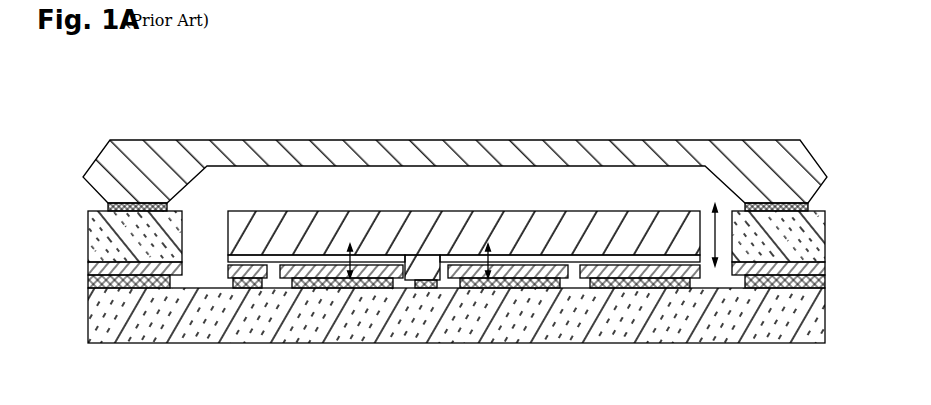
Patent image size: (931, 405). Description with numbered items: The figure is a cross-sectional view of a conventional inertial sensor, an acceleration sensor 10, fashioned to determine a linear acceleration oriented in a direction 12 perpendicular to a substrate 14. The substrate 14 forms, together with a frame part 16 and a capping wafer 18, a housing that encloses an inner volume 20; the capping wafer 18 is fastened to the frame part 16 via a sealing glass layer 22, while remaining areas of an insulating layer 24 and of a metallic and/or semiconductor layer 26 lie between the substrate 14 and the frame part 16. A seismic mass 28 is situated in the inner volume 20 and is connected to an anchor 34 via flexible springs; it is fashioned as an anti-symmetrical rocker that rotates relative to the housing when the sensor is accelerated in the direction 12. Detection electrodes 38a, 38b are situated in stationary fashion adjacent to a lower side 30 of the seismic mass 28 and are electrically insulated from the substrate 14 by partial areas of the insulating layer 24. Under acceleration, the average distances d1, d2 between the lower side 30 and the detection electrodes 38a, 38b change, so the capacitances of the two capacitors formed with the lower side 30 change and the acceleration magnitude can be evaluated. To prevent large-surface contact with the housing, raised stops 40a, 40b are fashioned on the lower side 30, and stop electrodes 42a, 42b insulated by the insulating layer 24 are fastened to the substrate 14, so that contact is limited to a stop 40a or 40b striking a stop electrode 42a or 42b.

The acceleration sensor 10 is at (496, 81).
The direction 12 is at (711, 232).
The substrate 14 is at (96, 320).
The frame part 16 is at (96, 250).
The capping wafer 18 is at (96, 168).
The inner volume 20 is at (423, 187).
The sealing glass layer 22 is at (110, 207).
The insulating layer 24 is at (95, 282).
The metallic and/or semiconductor layer 26 is at (95, 268).
The seismic mass 28 is at (236, 237).
The lower side 30 is at (528, 285).
The anchor 34 is at (428, 283).
The detection electrode 38a is at (328, 290).
The detection electrode 38b is at (565, 290).
The stop 40a is at (282, 258).
The stop 40b is at (665, 259).
The stop electrode 42a is at (250, 272).
The stop electrode 42b is at (648, 276).
The average distance d1 is at (356, 278).
The average distance d2 is at (492, 278).